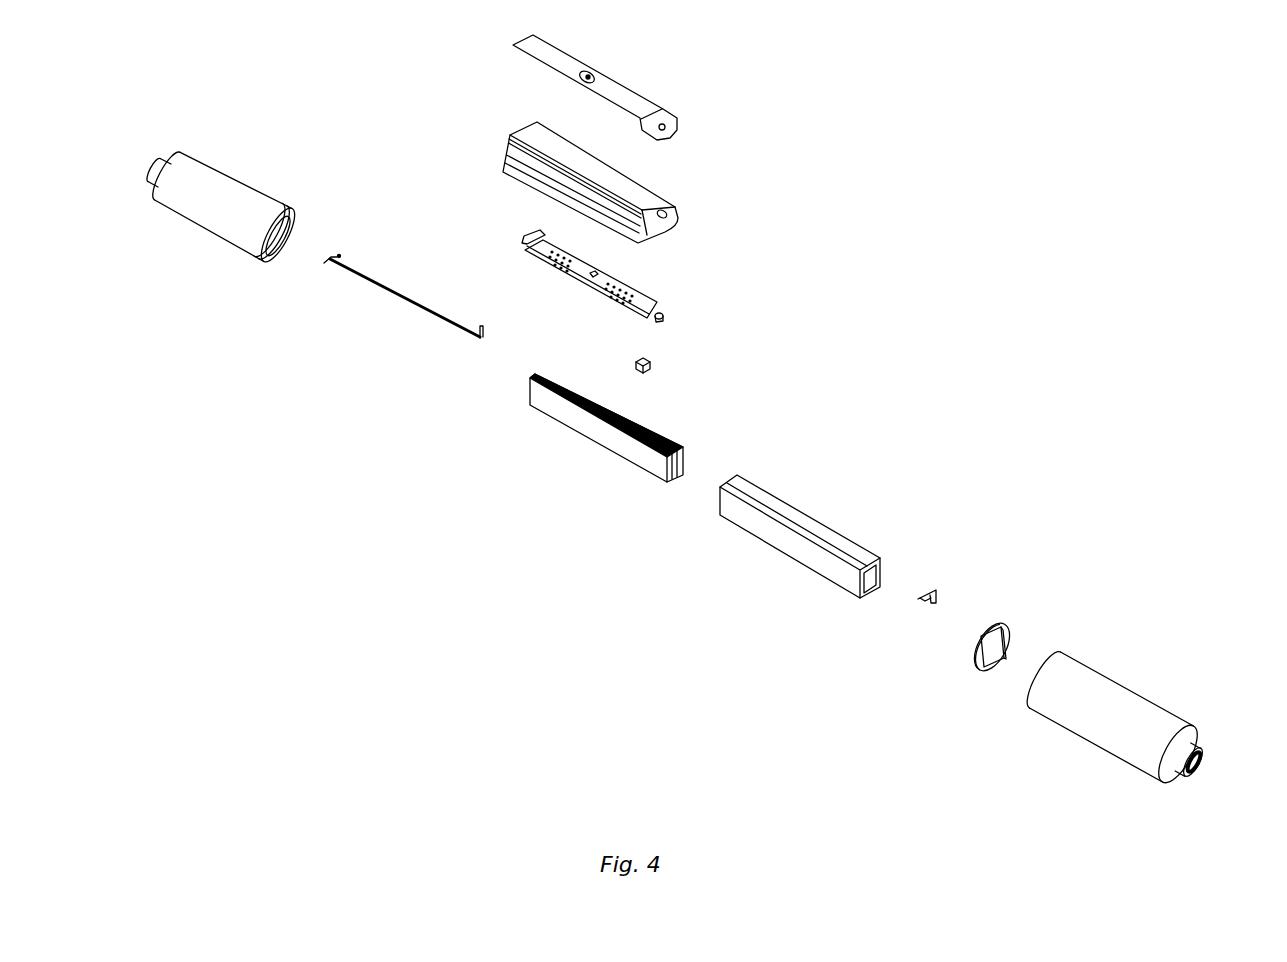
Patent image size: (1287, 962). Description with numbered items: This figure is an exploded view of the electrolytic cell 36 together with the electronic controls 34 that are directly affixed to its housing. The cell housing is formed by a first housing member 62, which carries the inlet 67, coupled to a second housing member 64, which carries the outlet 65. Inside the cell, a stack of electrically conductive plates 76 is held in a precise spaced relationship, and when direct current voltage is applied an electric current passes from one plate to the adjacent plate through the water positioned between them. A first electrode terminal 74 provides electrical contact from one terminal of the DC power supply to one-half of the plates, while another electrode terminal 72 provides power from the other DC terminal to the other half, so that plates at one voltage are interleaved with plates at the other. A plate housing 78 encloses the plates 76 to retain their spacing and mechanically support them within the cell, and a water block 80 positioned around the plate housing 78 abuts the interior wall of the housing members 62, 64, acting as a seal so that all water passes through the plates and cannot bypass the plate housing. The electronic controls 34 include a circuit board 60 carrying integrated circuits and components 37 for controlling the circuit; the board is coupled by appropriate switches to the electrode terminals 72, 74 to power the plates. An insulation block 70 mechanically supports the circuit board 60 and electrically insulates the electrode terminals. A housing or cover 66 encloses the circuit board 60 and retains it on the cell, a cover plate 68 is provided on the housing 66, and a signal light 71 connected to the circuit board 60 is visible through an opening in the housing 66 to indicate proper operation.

The electronic controls 34 is at (670, 277).
The electrolytic cell 36 is at (506, 554).
The integrated circuits and components 37 is at (563, 239).
The circuit board 60 is at (658, 302).
The first housing member 62 is at (232, 185).
The second housing member 64 is at (1127, 700).
The outlet 65 is at (1200, 752).
The housing 66 is at (652, 195).
The inlet 67 is at (152, 165).
The cover plate 68 is at (642, 108).
The insulation block 70 is at (650, 368).
The signal light 71 is at (662, 319).
The electrode terminal 72 is at (385, 283).
The first electrode terminal 74 is at (938, 590).
The plates 76 is at (683, 450).
The plate housing 78 is at (822, 530).
The water block 80 is at (1000, 625).